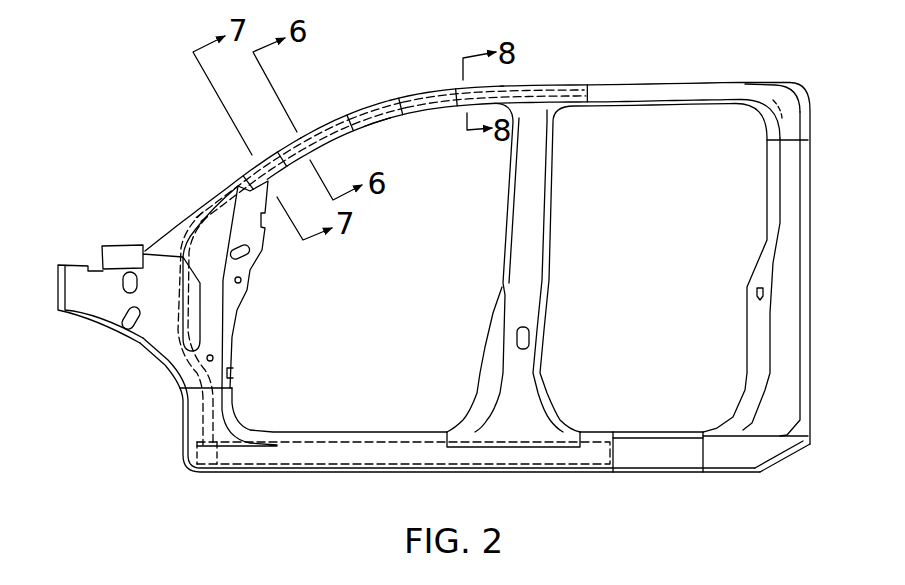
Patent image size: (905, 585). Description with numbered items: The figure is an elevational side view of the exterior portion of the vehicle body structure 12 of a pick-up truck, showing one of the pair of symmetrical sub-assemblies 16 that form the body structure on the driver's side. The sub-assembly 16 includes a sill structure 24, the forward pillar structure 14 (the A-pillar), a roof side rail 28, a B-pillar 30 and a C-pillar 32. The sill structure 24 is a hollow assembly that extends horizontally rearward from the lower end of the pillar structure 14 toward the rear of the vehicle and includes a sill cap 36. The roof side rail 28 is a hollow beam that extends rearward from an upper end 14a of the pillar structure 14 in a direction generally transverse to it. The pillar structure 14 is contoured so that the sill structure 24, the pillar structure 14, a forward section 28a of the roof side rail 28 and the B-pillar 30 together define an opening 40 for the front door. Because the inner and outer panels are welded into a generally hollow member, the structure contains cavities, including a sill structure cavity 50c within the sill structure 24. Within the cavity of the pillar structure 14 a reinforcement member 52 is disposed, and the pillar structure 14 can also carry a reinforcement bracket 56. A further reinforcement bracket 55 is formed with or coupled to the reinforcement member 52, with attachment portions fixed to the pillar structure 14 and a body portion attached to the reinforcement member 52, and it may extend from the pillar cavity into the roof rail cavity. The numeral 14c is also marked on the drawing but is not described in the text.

The vehicle body structure 12 is at (677, 66).
The pillar structure 14 is at (257, 263).
The upper end of the pillar structure 14a is at (308, 133).
The A-pillar reinforcement portion 14c is at (357, 107).
The sub-assembly 16 is at (728, 84).
The sill structure 24 is at (595, 473).
The roof side rail 28 is at (605, 86).
The forward section of the roof side rail 28a is at (383, 108).
The B-pillar 30 is at (553, 212).
The C-pillar 32 is at (767, 210).
The sill cap 36 is at (185, 463).
The opening for a front door 40 is at (505, 215).
The sill structure cavity 50c is at (326, 452).
The reinforcement member 52 is at (343, 126).
The reinforcement bracket 55 is at (377, 123).
The reinforcement bracket 56 is at (250, 173).